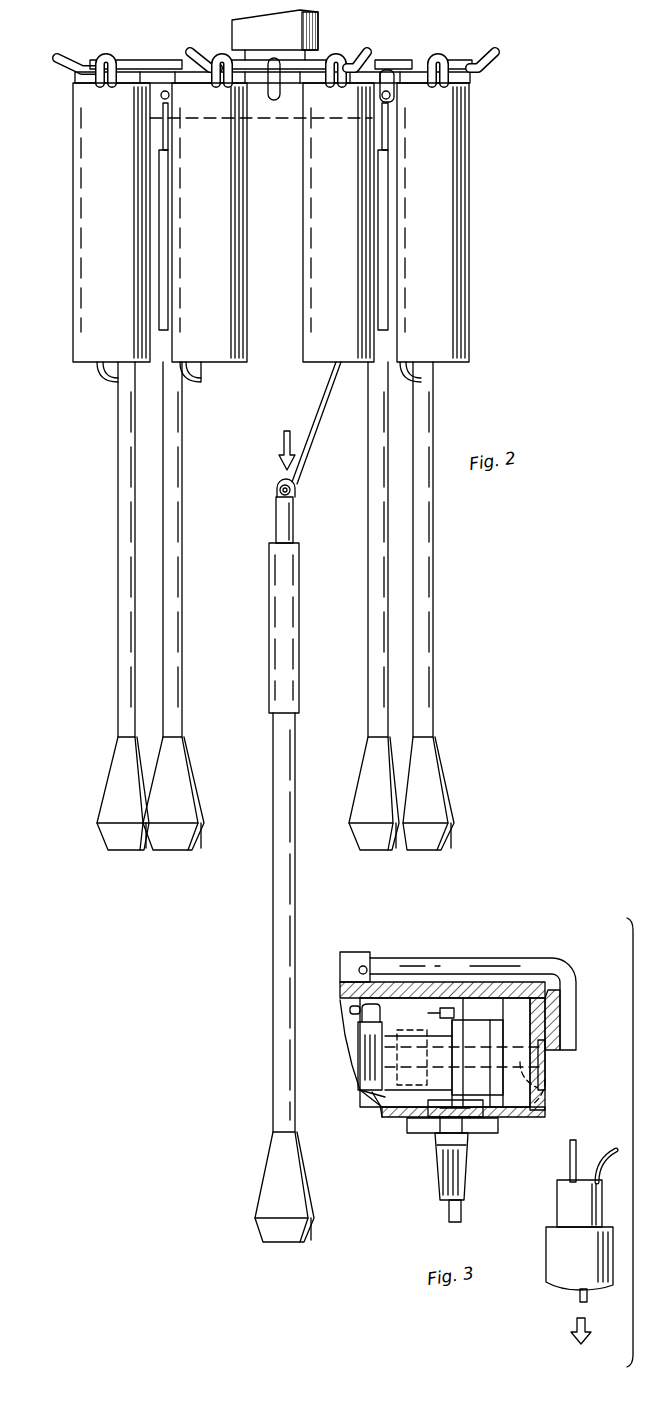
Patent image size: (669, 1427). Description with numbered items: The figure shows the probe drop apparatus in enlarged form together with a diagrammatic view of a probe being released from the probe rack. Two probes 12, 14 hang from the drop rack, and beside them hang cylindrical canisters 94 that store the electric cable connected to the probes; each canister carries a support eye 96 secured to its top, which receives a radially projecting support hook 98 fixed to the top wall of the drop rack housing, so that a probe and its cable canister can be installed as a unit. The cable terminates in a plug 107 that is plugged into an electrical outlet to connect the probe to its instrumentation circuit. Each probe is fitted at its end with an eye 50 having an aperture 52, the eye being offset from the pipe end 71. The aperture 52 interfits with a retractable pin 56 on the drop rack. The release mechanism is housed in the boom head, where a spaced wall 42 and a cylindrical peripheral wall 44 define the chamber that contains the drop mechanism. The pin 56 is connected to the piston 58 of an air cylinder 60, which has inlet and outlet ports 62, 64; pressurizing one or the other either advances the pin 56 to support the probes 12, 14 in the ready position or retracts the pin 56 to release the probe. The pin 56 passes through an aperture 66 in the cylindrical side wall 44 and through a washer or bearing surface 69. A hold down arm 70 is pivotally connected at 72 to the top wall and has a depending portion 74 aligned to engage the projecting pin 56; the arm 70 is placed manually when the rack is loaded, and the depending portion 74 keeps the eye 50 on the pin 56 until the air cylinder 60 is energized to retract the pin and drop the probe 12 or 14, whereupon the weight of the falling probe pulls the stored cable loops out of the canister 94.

In FIG. 2, the probe 12 is at (122, 598).
In FIG. 2, the probe 14 is at (432, 592).
In FIG. 3, the spaced wall 42 is at (445, 982).
In FIG. 3, the cylindrical peripheral wall 44 is at (532, 1108).
In FIG. 2, the eye 50 is at (280, 482).
In FIG. 3, the eye 50 is at (574, 1165).
In FIG. 2, the aperture 52 is at (279, 491).
In FIG. 2, the retractable pin 56 is at (274, 100).
In FIG. 3, the retractable pin 56 is at (548, 1086).
In FIG. 3, the piston 58 is at (356, 1084).
In FIG. 3, the air cylinder 60 is at (380, 1108).
In FIG. 3, the inlet and outlet port 62 is at (352, 1010).
In FIG. 3, the inlet and outlet port 64 is at (438, 1012).
In FIG. 3, the aperture 66 is at (550, 1060).
In FIG. 3, the washer or bearing surface 69 is at (548, 1045).
In FIG. 3, the hold down arm 70 is at (515, 958).
In FIG. 2, the pipe end 71 is at (276, 522).
In FIG. 3, the pipe end 71 is at (565, 1203).
In FIG. 3, the pivot connection 72 is at (366, 962).
In FIG. 2, the depending portion 74 is at (277, 82).
In FIG. 3, the depending portion 74 is at (572, 992).
In FIG. 2, the canister 94 is at (78, 188).
In FIG. 2, the support eye 96 is at (106, 60).
In FIG. 2, the support hook 98 is at (73, 58).
In FIG. 3, the plug 107 is at (442, 1168).